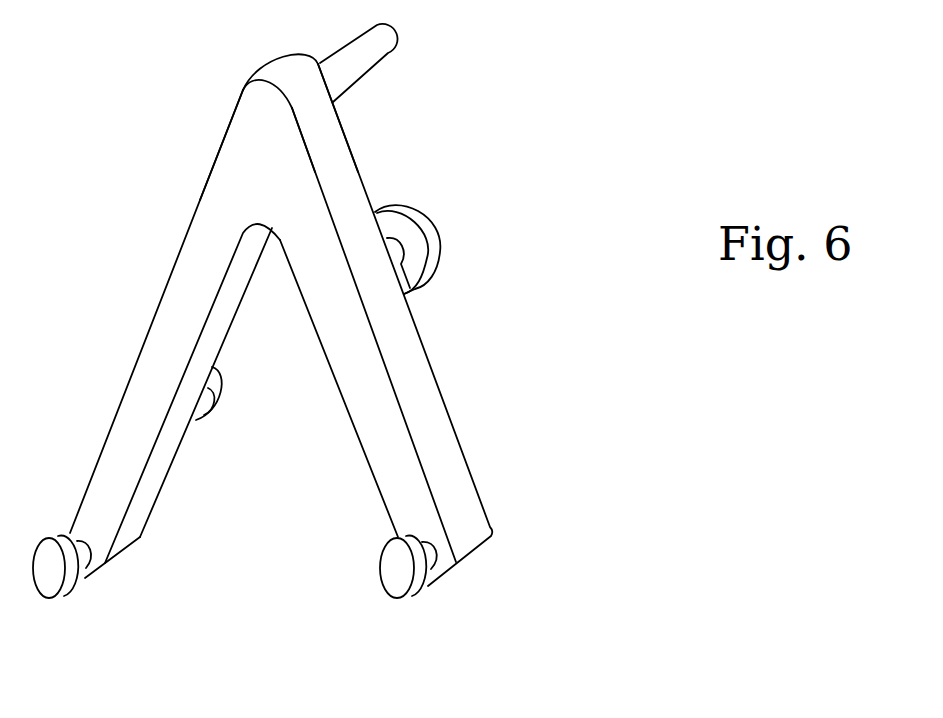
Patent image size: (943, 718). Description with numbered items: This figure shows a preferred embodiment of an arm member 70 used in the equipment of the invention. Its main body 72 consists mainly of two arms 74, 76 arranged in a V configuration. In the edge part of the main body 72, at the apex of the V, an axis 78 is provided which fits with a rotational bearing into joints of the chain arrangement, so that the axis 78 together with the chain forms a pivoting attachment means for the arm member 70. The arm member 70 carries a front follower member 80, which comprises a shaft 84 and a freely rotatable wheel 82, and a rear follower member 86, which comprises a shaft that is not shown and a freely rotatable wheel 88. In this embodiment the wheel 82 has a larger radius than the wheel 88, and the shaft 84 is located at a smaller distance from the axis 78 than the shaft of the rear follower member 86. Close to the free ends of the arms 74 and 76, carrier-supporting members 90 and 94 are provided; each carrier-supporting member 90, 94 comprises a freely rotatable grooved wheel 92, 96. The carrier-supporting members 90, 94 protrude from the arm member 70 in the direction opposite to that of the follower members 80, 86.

The arm member 70 is at (567, 92).
The main body 72 is at (245, 142).
The arm 74 is at (122, 482).
The arm 76 is at (447, 447).
The axis 78 is at (372, 52).
The front follower member 80 is at (467, 216).
The wheel 82 is at (430, 238).
The shaft 84 is at (417, 289).
The rear follower member 86 is at (243, 392).
The wheel 88 is at (212, 392).
The carrier-supporting member 90 is at (364, 596).
The grooved wheel 92 is at (400, 580).
The carrier-supporting member 94 is at (106, 588).
The grooved wheel 96 is at (52, 577).